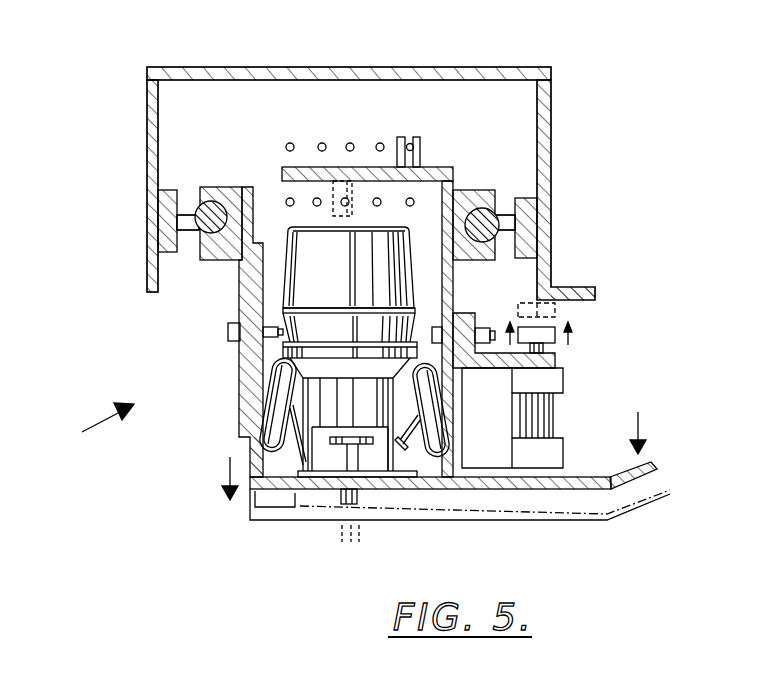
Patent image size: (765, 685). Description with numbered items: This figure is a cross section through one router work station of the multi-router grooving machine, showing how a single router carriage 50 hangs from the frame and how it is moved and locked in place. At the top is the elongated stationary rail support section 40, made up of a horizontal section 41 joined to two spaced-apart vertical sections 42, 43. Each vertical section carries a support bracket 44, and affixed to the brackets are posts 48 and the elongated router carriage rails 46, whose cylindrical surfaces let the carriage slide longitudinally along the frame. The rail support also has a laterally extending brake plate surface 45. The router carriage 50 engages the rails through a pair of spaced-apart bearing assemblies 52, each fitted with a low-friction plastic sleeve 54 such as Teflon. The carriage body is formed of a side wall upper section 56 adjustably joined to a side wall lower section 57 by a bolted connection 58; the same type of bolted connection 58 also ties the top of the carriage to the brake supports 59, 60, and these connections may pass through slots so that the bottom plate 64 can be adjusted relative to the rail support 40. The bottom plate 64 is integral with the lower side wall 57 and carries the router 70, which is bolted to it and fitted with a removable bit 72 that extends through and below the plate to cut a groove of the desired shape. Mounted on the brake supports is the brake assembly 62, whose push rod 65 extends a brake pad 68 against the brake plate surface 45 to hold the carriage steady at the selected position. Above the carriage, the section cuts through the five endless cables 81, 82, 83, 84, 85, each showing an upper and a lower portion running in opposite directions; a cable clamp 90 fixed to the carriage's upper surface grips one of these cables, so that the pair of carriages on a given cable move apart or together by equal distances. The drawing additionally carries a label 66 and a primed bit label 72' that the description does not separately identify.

The stationary rail support section 40 is at (343, 153).
The horizontal section 41 is at (238, 78).
The vertical section 42 is at (147, 152).
The vertical section 43 is at (551, 108).
The support bracket 44 is at (165, 253).
The brake plate surface 45 is at (566, 296).
The router carriage rail 46 is at (190, 230).
The post 48 is at (191, 213).
The router carriage 50 is at (91, 423).
The bearing assembly 52 is at (218, 187).
The plastic sleeve 54 is at (228, 248).
The side wall upper section 56 is at (239, 400).
The side wall lower section 57 is at (250, 450).
The bolted connection 58 is at (228, 333).
The brake support 59 is at (553, 362).
The brake support 60 is at (576, 477).
The brake assembly 62 is at (535, 420).
The bottom plate 64 is at (465, 482).
The push rod 65 is at (548, 347).
The lift direction 66 is at (495, 330).
The brake pad 68 is at (560, 308).
The router 70 is at (340, 275).
The removable bit 72 is at (375, 520).
The alternate bracket position 72' is at (324, 545).
The endless cable 81 is at (286, 200).
The endless cable 82 is at (317, 198).
The endless cable 83 is at (345, 198).
The endless cable 84 is at (377, 198).
The endless cable 85 is at (443, 180).
The cable clamp 90 is at (420, 148).